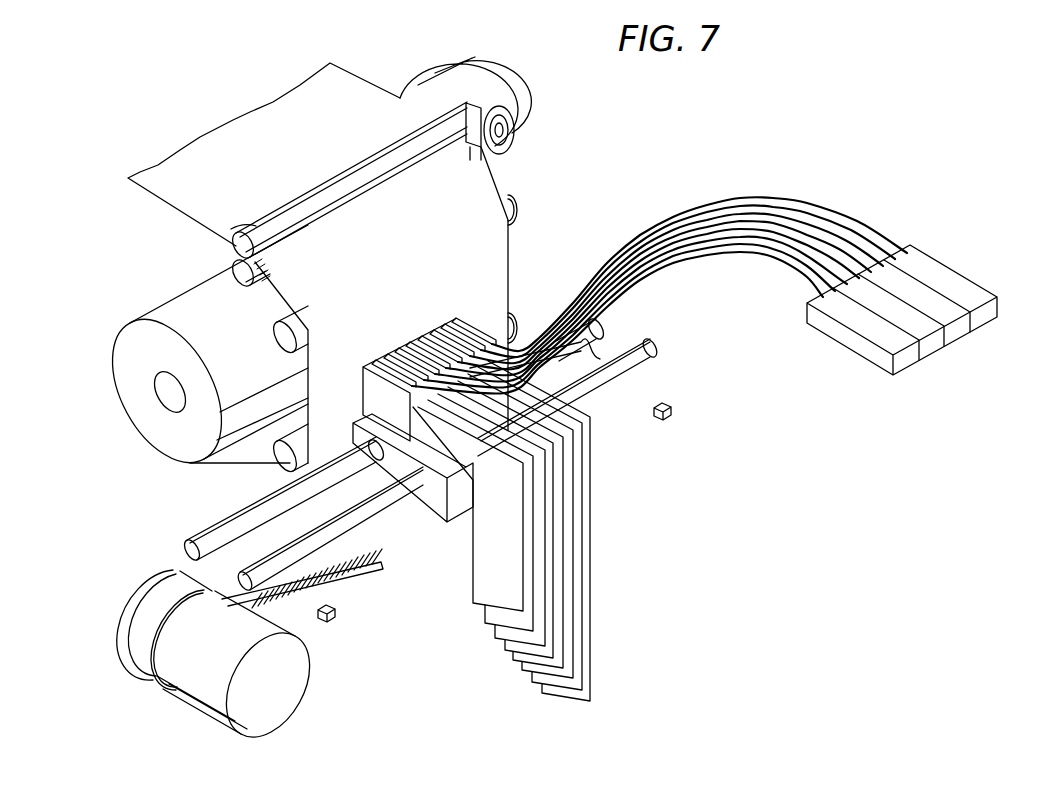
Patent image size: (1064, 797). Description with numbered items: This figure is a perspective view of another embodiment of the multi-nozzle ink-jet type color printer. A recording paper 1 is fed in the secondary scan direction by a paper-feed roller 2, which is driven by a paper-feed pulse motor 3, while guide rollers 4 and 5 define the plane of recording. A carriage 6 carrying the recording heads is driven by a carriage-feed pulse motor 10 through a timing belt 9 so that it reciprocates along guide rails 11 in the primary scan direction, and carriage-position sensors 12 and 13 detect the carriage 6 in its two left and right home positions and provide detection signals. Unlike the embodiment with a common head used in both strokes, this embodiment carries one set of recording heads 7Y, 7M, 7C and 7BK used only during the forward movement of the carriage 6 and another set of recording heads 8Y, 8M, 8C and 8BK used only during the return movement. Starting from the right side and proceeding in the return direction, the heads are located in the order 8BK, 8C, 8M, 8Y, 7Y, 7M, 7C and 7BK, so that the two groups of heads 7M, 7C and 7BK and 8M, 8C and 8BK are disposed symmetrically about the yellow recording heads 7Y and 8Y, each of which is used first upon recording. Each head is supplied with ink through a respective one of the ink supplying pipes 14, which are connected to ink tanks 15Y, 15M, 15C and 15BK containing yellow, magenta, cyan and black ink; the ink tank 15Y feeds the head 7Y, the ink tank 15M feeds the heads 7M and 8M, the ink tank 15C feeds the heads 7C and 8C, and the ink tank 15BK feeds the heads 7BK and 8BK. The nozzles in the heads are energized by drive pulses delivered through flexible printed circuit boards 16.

The recording paper 1 is at (360, 91).
The paper-feed roller 2 is at (234, 229).
The paper-feed pulse motor 3 is at (493, 82).
The guide roller 4 is at (512, 197).
The guide roller 5 is at (285, 465).
The carriage 6 is at (435, 505).
The recording head 7BK is at (368, 365).
The recording head 7C is at (383, 357).
The recording head 7M is at (395, 352).
The recording head 7Y is at (406, 345).
The recording head 8Y is at (418, 338).
The recording head 8M is at (430, 333).
The recording head 8C is at (441, 327).
The recording head 8BK is at (455, 325).
The timing belt 9 is at (196, 575).
The carriage-feed pulse motor 10 is at (290, 692).
The guide rails 11 is at (217, 535).
The carriage-position sensor 12 is at (330, 623).
The carriage-position sensor 13 is at (668, 421).
The ink supplying pipes 14 is at (677, 219).
The ink tank 15BK is at (880, 353).
The ink tank 15C is at (930, 333).
The ink tank 15M is at (955, 313).
The ink tank 15Y is at (987, 310).
The flexible printed circuit boards 16 is at (490, 590).